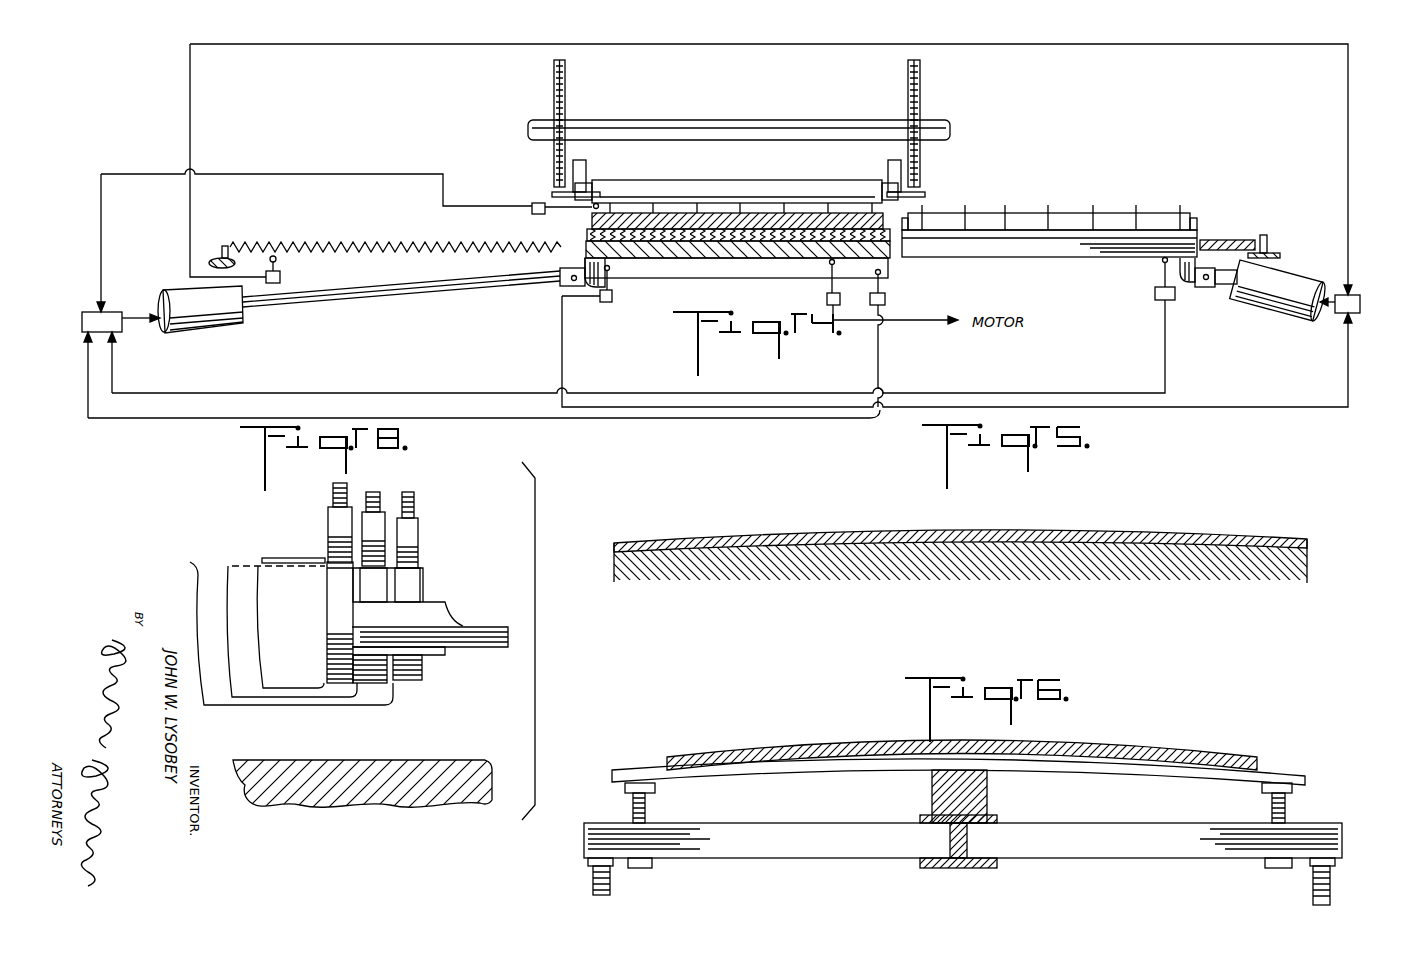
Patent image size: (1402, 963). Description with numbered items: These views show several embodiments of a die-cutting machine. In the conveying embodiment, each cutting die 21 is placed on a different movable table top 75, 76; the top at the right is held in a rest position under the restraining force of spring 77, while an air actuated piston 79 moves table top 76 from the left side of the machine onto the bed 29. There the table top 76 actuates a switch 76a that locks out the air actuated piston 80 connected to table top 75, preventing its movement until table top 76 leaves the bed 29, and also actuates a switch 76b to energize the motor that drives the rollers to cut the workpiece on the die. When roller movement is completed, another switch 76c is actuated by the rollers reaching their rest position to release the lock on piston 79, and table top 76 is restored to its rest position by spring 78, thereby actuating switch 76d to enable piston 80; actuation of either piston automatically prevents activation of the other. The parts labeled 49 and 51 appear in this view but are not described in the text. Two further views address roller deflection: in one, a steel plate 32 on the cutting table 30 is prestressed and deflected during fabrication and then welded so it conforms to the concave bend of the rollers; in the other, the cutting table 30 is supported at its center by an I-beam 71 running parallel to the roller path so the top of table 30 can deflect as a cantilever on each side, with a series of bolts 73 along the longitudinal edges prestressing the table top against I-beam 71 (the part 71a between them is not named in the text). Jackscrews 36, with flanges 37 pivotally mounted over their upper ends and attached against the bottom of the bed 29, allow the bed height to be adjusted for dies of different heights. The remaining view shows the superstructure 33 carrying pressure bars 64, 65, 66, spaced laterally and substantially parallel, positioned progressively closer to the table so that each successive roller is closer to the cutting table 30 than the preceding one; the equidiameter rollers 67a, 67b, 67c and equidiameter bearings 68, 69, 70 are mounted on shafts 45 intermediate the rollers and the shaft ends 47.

In FIG. 14, the upright post 49 is at (566, 76).
In FIG. 14, the cross bar 51 is at (741, 127).
In FIG. 14, the cutting die 21 is at (811, 213).
In FIG. 14, the table top 76 is at (788, 259).
In FIG. 14, the switch 76a is at (600, 296).
In FIG. 14, the switch 76b is at (827, 299).
In FIG. 14, the switch 76c is at (538, 214).
In FIG. 14, the switch 76d is at (280, 277).
In FIG. 14, the bed 29 is at (638, 270).
In FIG. 16, the bed 29 is at (1047, 850).
In FIG. 14, the spring 78 is at (388, 246).
In FIG. 14, the air actuated piston 79 is at (205, 325).
In FIG. 14, the table top 75 is at (993, 262).
In FIG. 14, the spring 77 is at (1228, 245).
In FIG. 14, the air actuated piston 80 is at (1246, 302).
In FIG. 15, the steel plate 32 is at (1157, 540).
In FIG. 16, the steel plate 32 is at (1055, 752).
In FIG. 15, the cutting table 30 is at (1290, 578).
In FIG. 16, the cutting table 30 is at (655, 769).
In FIG. 13, the cutting table 30 is at (478, 742).
In FIG. 16, the bolts 73 is at (648, 803).
In FIG. 16, the spacer block 71a is at (987, 799).
In FIG. 16, the I-beam 71 is at (948, 868).
In FIG. 16, the flanges 37 is at (588, 866).
In FIG. 16, the jackscrews 36 is at (593, 888).
In FIG. 13, the shaft ends 47 is at (499, 622).
In FIG. 13, the superstructure 33 is at (406, 489).
In FIG. 13, the pressure bar 64 is at (335, 518).
In FIG. 13, the pressure bar 65 is at (373, 533).
In FIG. 13, the pressure bar 66 is at (412, 528).
In FIG. 13, the bearing 68 is at (395, 583).
In FIG. 13, the bearing 69 is at (378, 595).
In FIG. 13, the shafts 45 is at (432, 636).
In FIG. 13, the bearing 70 is at (421, 681).
In FIG. 13, the roller 67a is at (265, 560).
In FIG. 13, the roller 67b is at (230, 566).
In FIG. 13, the roller 67c is at (192, 563).